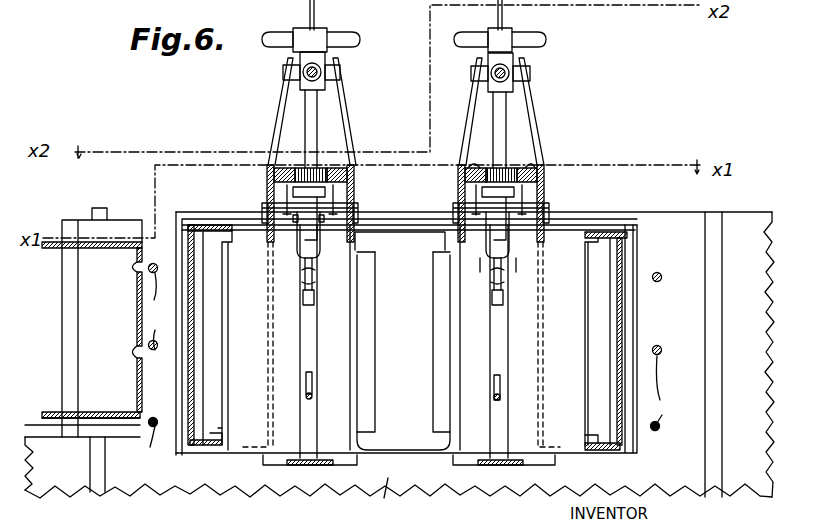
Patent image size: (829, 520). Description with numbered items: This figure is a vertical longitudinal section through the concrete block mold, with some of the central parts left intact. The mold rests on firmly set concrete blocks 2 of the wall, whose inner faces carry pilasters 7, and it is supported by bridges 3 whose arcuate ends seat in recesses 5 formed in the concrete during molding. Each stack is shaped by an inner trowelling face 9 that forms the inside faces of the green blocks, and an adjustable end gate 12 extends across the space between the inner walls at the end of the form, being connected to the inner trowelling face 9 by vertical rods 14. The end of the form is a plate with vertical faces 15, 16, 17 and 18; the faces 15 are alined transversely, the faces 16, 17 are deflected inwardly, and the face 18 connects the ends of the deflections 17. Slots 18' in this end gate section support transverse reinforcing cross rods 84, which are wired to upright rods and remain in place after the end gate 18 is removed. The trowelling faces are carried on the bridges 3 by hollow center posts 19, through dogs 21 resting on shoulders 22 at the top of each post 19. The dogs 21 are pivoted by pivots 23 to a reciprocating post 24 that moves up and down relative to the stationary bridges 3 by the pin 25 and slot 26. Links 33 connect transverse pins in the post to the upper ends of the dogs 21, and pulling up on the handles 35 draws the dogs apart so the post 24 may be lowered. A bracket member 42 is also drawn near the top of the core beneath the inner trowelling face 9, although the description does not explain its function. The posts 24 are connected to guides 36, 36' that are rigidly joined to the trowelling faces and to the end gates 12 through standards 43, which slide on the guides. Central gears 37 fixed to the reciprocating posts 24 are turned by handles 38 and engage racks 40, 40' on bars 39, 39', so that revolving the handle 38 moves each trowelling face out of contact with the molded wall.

The set concrete blocks 2 is at (380, 499).
The bridges 3 is at (318, 467).
The recesses 5 is at (265, 461).
The pilasters 7 is at (136, 476).
The inner trowelling face 9 is at (405, 337).
The adjustable end gate 12 is at (196, 325).
The vertical rods 14 is at (206, 385).
The vertical face 15 is at (58, 298).
The vertical face 16 is at (70, 315).
The vertical face 17 is at (92, 328).
The vertical face 18 is at (122, 330).
The slots 18' is at (114, 309).
The hollow center posts 19 is at (306, 428).
The dogs 21 is at (303, 296).
The shoulders 22 is at (492, 290).
The pivots 23 is at (302, 272).
The reciprocating post 24 is at (305, 113).
The pin 25 is at (306, 397).
The slot 26 is at (307, 378).
The links 33 is at (320, 243).
The handles 35 is at (316, 14).
The guide 36 is at (329, 71).
The guide 36' is at (528, 72).
The central gears 37 is at (528, 165).
The handles 38 is at (540, 40).
The rack bar 39 is at (390, 203).
The rack bar 39' is at (430, 203).
The rack 40 is at (478, 156).
The rack 40' is at (547, 143).
The bracket 42 is at (445, 236).
The standards 43 is at (282, 128).
The cross rods 84 is at (410, 359).